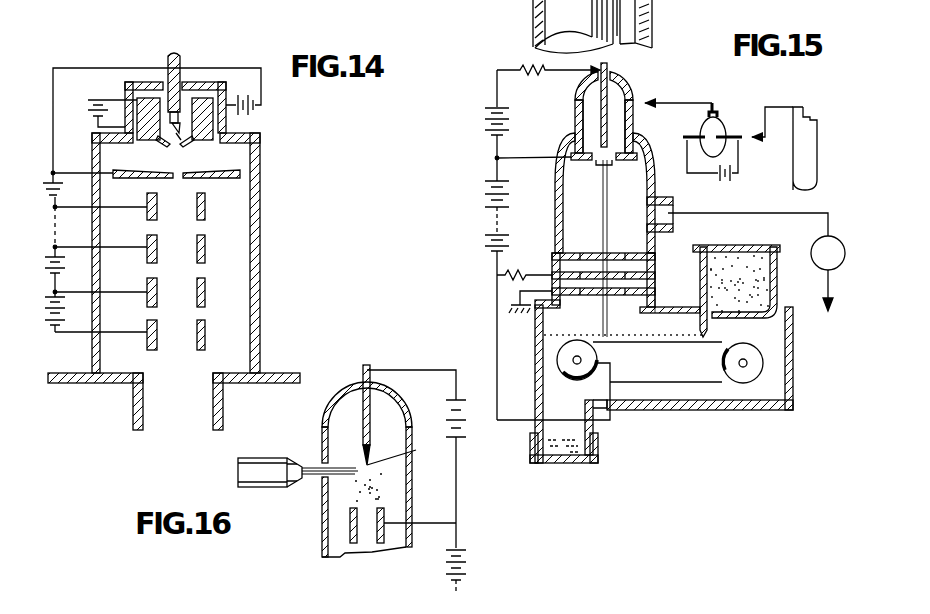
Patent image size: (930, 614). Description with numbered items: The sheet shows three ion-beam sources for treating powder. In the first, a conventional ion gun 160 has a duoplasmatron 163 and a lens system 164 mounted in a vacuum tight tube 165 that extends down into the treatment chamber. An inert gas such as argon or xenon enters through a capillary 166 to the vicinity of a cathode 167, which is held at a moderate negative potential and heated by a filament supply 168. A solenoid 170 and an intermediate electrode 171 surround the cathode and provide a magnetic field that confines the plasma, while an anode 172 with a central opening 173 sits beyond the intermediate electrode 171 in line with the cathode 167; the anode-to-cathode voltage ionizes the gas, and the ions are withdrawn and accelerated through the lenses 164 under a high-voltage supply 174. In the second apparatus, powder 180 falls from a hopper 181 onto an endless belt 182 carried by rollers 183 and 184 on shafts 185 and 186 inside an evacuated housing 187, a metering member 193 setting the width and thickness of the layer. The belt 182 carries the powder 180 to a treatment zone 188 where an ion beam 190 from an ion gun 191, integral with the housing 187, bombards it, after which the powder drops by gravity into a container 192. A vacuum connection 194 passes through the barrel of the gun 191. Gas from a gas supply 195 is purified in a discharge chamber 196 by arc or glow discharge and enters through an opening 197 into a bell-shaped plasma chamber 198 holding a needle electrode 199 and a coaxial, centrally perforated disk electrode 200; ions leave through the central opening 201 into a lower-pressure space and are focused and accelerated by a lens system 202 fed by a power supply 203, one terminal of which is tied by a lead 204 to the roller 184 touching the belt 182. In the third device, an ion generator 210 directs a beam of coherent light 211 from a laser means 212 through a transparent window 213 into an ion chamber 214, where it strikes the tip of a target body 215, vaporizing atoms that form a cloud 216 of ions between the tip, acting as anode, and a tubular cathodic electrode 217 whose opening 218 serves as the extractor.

In FIG. 14, the ion gun 160 is at (272, 240).
In FIG. 14, the duoplasmatron 163 is at (230, 126).
In FIG. 14, the lens system 164 is at (190, 210).
In FIG. 14, the vacuum tight tube 165 is at (258, 302).
In FIG. 14, the capillary 166 is at (172, 54).
In FIG. 14, the cathode 167 is at (181, 126).
In FIG. 14, the filament supply 168 is at (190, 143).
In FIG. 14, the solenoid 170 is at (137, 101).
In FIG. 14, the intermediate electrode 171 is at (166, 145).
In FIG. 14, the anode 172 is at (222, 178).
In FIG. 14, the central opening 173 is at (170, 177).
In FIG. 14, the high-voltage supply 174 is at (52, 286).
In FIG. 15, the powder 180 is at (720, 282).
In FIG. 15, the hopper 181 is at (777, 291).
In FIG. 15, the endless belt 182 is at (672, 348).
In FIG. 15, the roller 183 is at (740, 330).
In FIG. 15, the roller 184 is at (598, 360).
In FIG. 15, the shaft 185 is at (765, 364).
In FIG. 15, the shaft 186 is at (557, 360).
In FIG. 15, the housing 187 is at (793, 343).
In FIG. 15, the treatment zone 188 is at (587, 334).
In FIG. 15, the ion beam 190 is at (608, 232).
In FIG. 15, the ion gun 191 is at (558, 210).
In FIG. 15, the container 192 is at (548, 465).
In FIG. 15, the metering member 193 is at (700, 333).
In FIG. 15, the vacuum connection 194 is at (667, 211).
In FIG. 15, the gas supply 195 is at (810, 143).
In FIG. 15, the discharge chamber 196 is at (714, 112).
In FIG. 15, the opening 197 is at (628, 101).
In FIG. 15, the plasma chamber 198 is at (576, 119).
In FIG. 15, the needle electrode 199 is at (599, 105).
In FIG. 15, the disk electrode 200 is at (598, 164).
In FIG. 15, the central opening 201 is at (617, 170).
In FIG. 15, the lens system 202 is at (565, 255).
In FIG. 15, the power supply 203 is at (494, 244).
In FIG. 15, the lead 204 is at (522, 420).
In FIG. 16, the ion generator 210 is at (322, 411).
In FIG. 16, the beam of coherent light 211 is at (309, 480).
In FIG. 16, the laser means 212 is at (262, 457).
In FIG. 16, the transparent window 213 is at (323, 465).
In FIG. 16, the ion chamber 214 is at (390, 413).
In FIG. 16, the target body 215 is at (410, 451).
In FIG. 16, the cloud of ions 216 is at (384, 487).
In FIG. 16, the tubular cathodic electrode 217 is at (351, 546).
In FIG. 16, the opening 218 is at (365, 546).